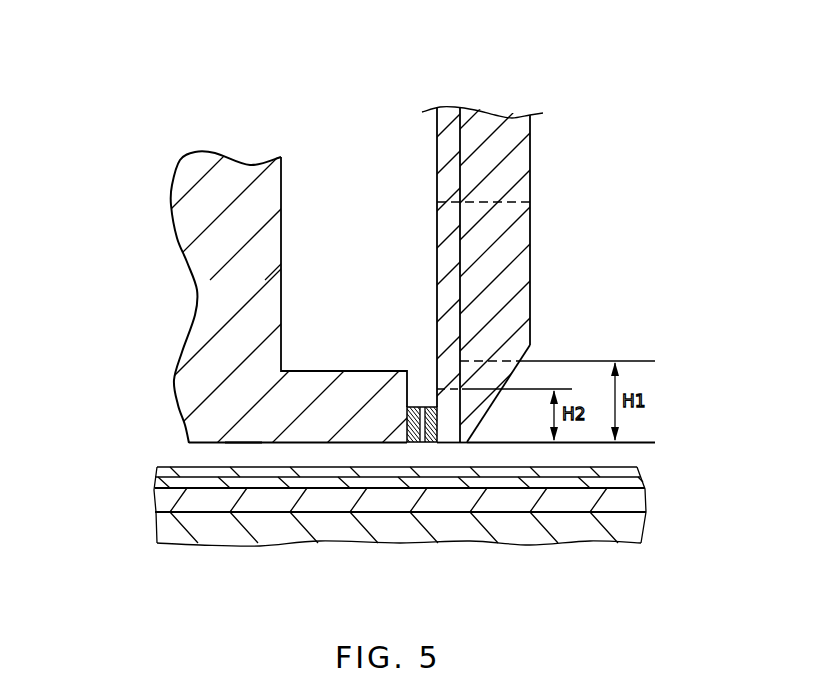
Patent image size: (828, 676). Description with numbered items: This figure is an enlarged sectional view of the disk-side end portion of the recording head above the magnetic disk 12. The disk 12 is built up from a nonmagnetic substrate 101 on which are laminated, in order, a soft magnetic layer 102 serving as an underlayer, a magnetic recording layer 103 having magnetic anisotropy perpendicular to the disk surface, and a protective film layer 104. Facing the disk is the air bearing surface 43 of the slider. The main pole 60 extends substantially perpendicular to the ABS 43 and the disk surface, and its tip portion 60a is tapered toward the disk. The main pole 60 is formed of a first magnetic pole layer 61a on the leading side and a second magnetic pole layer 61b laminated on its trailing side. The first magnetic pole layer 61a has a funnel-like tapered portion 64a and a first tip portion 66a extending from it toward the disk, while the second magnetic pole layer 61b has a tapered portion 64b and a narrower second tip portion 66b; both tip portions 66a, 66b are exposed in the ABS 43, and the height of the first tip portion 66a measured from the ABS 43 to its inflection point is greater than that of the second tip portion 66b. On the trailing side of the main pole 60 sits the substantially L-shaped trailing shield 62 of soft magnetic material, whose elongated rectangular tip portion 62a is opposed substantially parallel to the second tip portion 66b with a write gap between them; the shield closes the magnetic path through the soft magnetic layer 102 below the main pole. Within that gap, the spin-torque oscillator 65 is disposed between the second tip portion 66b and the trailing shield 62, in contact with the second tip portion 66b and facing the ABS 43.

The magnetic disk 12 is at (370, 521).
The disk facing surface (air bearing surface) 43 is at (243, 446).
The main pole 60 is at (428, 320).
The tip portion of the main pole 60a is at (472, 452).
The first magnetic pole layer 61a is at (428, 343).
The second magnetic pole layer 61b is at (464, 343).
The trailing shield 62 is at (203, 303).
The tip portion of the trailing shield 62a is at (300, 425).
The tapered portion of the first magnetic pole layer 64a is at (528, 290).
The tapered portion of the second magnetic pole layer 64b is at (443, 322).
The spin-torque oscillator 65 is at (417, 454).
The first tip portion 66a is at (482, 418).
The second tip portion 66b is at (441, 446).
The substrate 101 is at (160, 530).
The soft magnetic layer 102 is at (160, 504).
The magnetic recording layer 103 is at (160, 484).
The protective film layer 104 is at (158, 470).